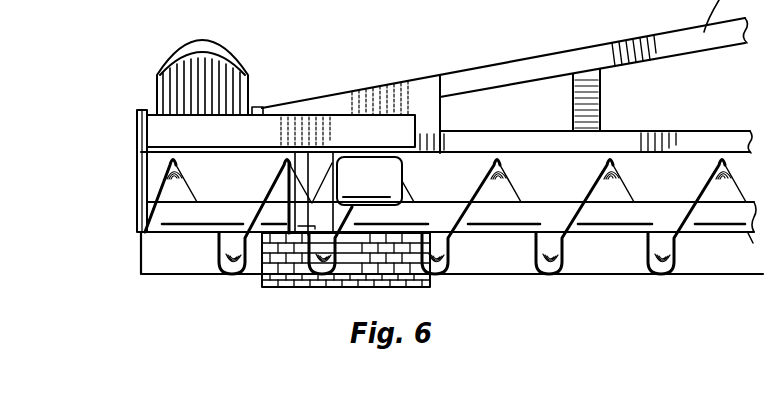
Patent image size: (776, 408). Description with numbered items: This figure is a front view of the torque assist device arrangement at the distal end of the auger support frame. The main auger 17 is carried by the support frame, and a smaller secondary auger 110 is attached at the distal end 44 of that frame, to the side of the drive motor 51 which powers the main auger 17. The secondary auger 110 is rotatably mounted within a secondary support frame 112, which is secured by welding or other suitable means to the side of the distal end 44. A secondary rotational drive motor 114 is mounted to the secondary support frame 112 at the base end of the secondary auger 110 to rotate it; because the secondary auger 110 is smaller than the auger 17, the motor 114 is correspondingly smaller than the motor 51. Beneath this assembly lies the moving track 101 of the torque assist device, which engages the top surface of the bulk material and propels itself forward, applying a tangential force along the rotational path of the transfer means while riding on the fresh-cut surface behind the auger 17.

The secondary support frame 112 is at (137, 140).
The drive motor 51 is at (231, 44).
The distal end 44 is at (408, 87).
The secondary rotational drive motor 114 is at (383, 180).
The auger 17 is at (622, 172).
The secondary auger 110 is at (226, 243).
The track 101 is at (422, 288).